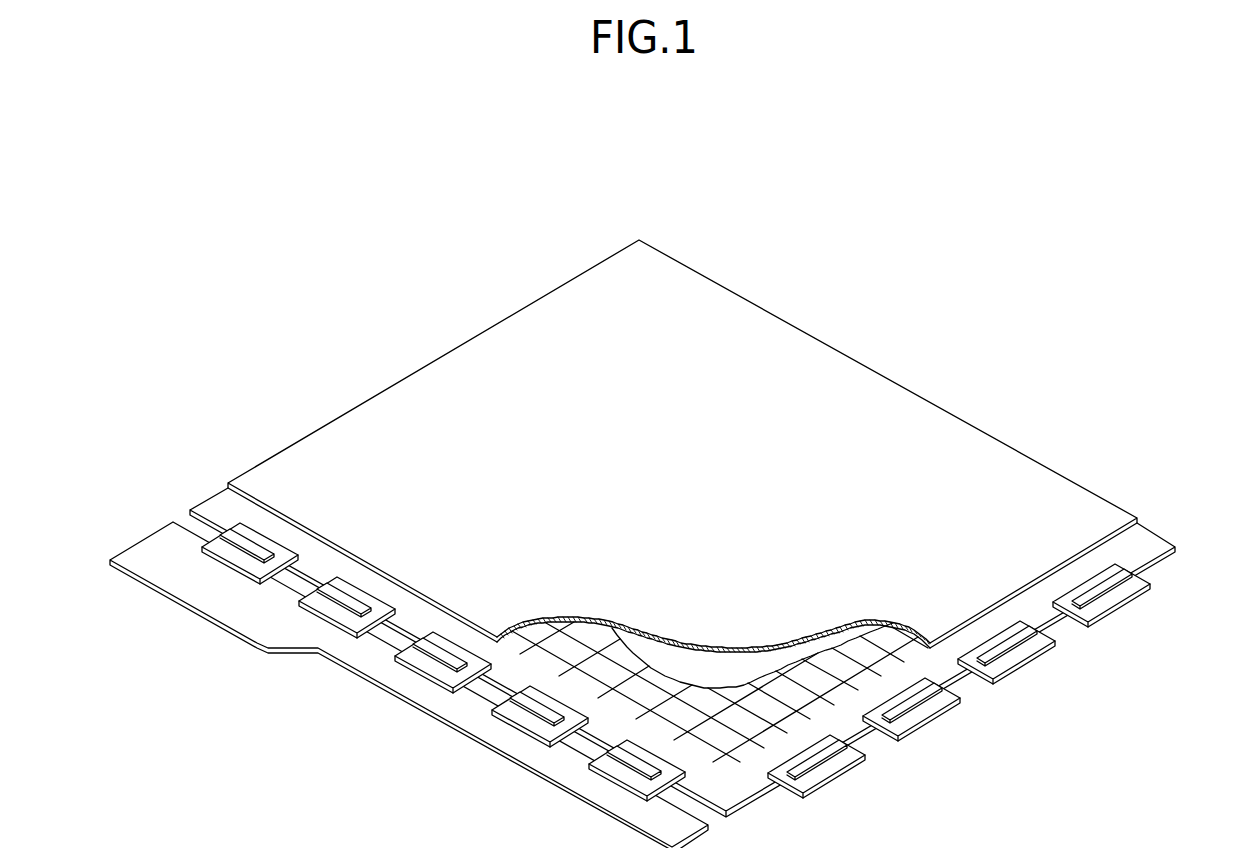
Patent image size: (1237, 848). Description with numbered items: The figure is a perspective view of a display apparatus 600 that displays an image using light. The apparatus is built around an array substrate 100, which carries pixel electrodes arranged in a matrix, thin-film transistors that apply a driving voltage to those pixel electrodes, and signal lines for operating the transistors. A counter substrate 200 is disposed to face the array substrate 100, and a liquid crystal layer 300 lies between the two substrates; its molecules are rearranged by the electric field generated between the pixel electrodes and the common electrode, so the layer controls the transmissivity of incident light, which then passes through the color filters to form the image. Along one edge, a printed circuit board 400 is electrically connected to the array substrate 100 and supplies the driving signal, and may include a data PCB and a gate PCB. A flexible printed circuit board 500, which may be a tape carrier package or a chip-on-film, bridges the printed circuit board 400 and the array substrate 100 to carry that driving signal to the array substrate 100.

The array substrate 100 is at (1147, 543).
The counter substrate 200 is at (878, 387).
The liquid crystal layer 300 is at (697, 657).
The printed circuit board 400 is at (160, 548).
The flexible printed circuit board 500 is at (240, 530).
The display apparatus 600 is at (1032, 334).